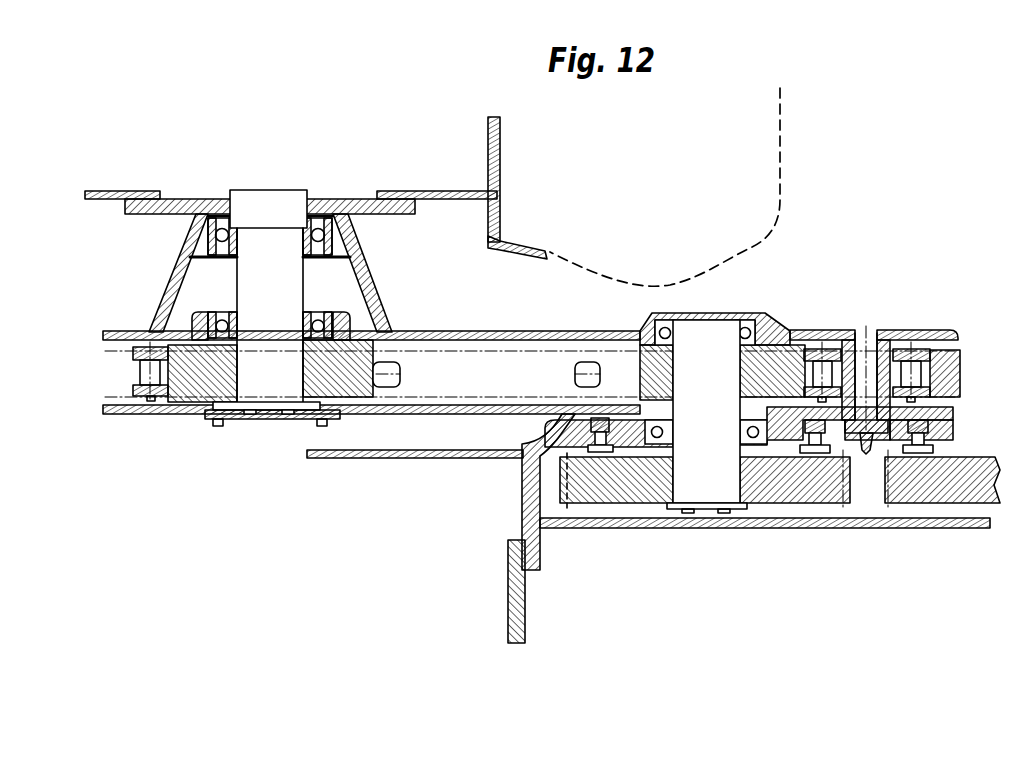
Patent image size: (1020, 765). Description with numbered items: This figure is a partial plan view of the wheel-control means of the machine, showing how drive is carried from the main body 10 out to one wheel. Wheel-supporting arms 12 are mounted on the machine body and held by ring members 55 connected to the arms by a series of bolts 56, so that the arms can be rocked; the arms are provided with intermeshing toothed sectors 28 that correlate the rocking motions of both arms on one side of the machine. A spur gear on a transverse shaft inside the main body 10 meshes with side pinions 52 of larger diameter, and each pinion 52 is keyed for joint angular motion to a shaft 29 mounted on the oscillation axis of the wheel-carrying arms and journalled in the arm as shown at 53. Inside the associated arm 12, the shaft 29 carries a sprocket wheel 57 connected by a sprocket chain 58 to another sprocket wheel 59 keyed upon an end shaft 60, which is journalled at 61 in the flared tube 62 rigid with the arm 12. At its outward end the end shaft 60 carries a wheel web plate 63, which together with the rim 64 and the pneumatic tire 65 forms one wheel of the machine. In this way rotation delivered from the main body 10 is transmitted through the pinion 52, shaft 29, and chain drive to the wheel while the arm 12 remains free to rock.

The main body 10 is at (906, 529).
The arm 12 is at (541, 332).
The intermeshing toothed sector 28 is at (877, 345).
The shaft 29 is at (716, 425).
The side pinion 52 is at (610, 489).
The journal 53 is at (759, 313).
The ring member 55 is at (828, 447).
The bolt 56 is at (808, 449).
The sprocket wheel 57 is at (798, 348).
The sprocket chain 58 is at (143, 346).
The sprocket wheel 59 is at (381, 336).
The end shaft 60 is at (283, 390).
The journal 61 is at (318, 315).
The flared tube 62 is at (355, 241).
The wheel web plate 63 is at (322, 198).
The rim 64 is at (502, 190).
The pneumatic tire 65 is at (779, 137).